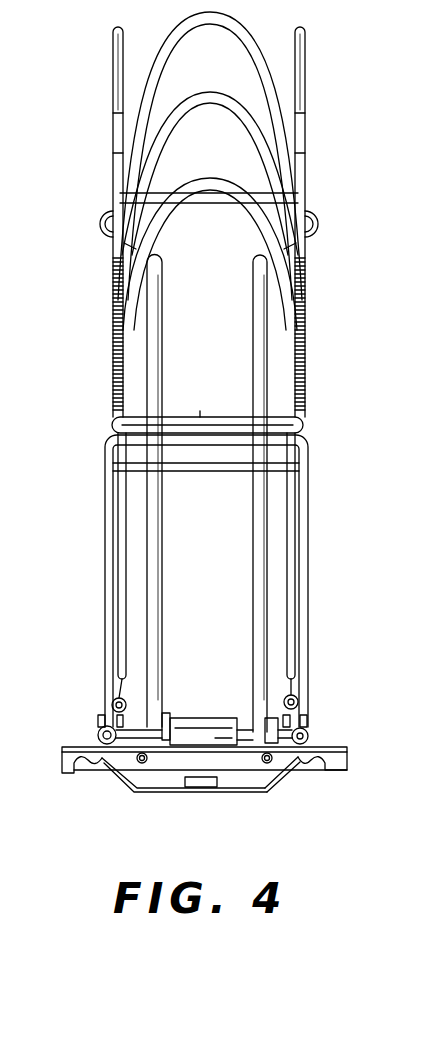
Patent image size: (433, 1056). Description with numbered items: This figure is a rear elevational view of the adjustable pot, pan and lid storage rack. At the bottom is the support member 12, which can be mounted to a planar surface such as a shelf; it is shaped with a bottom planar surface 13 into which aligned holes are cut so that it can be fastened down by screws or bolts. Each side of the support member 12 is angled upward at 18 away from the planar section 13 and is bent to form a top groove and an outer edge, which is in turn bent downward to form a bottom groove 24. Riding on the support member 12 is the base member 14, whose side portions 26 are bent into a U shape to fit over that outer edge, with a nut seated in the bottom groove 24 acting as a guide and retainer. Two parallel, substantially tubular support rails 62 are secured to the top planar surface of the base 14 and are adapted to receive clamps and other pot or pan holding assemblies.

The support member 12 is at (268, 794).
The bottom planar surface 13 is at (177, 791).
The base member 14 is at (322, 748).
The angled upward side 18 is at (293, 773).
The bottom groove 24 is at (76, 771).
The side portions 26 is at (348, 760).
The support rails 62 is at (97, 732).